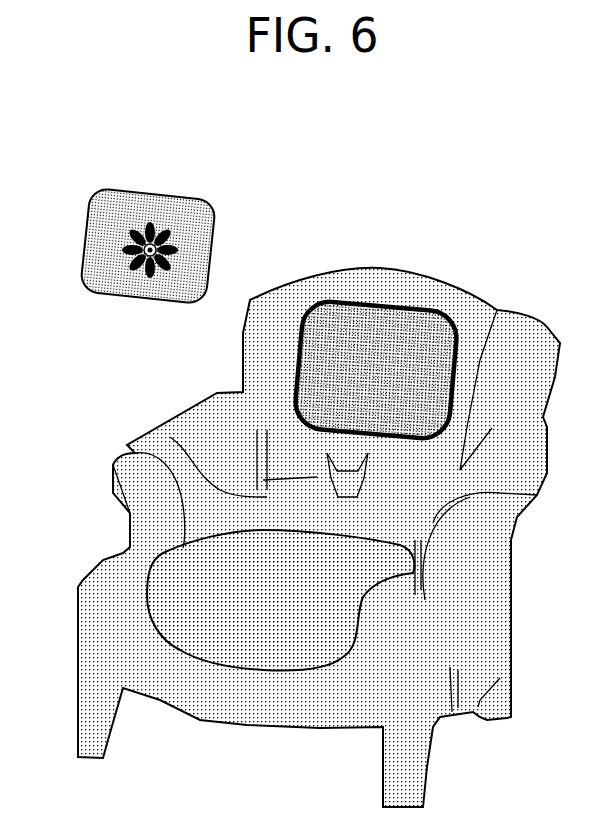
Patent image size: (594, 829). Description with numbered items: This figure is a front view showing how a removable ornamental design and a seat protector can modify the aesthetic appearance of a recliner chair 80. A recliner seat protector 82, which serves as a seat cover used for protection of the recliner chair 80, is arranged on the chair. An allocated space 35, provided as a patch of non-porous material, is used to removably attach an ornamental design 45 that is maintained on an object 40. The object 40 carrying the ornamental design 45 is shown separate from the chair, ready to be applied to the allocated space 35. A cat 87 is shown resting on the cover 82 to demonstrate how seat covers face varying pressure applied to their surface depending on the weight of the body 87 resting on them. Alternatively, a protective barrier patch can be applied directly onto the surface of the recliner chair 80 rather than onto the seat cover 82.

The object 40 is at (117, 187).
The ornamental design 45 is at (114, 239).
The recliner chair 80 is at (313, 537).
The cat 87 is at (170, 437).
The allocated space 35 is at (389, 390).
The recliner seat protector 82 is at (299, 588).